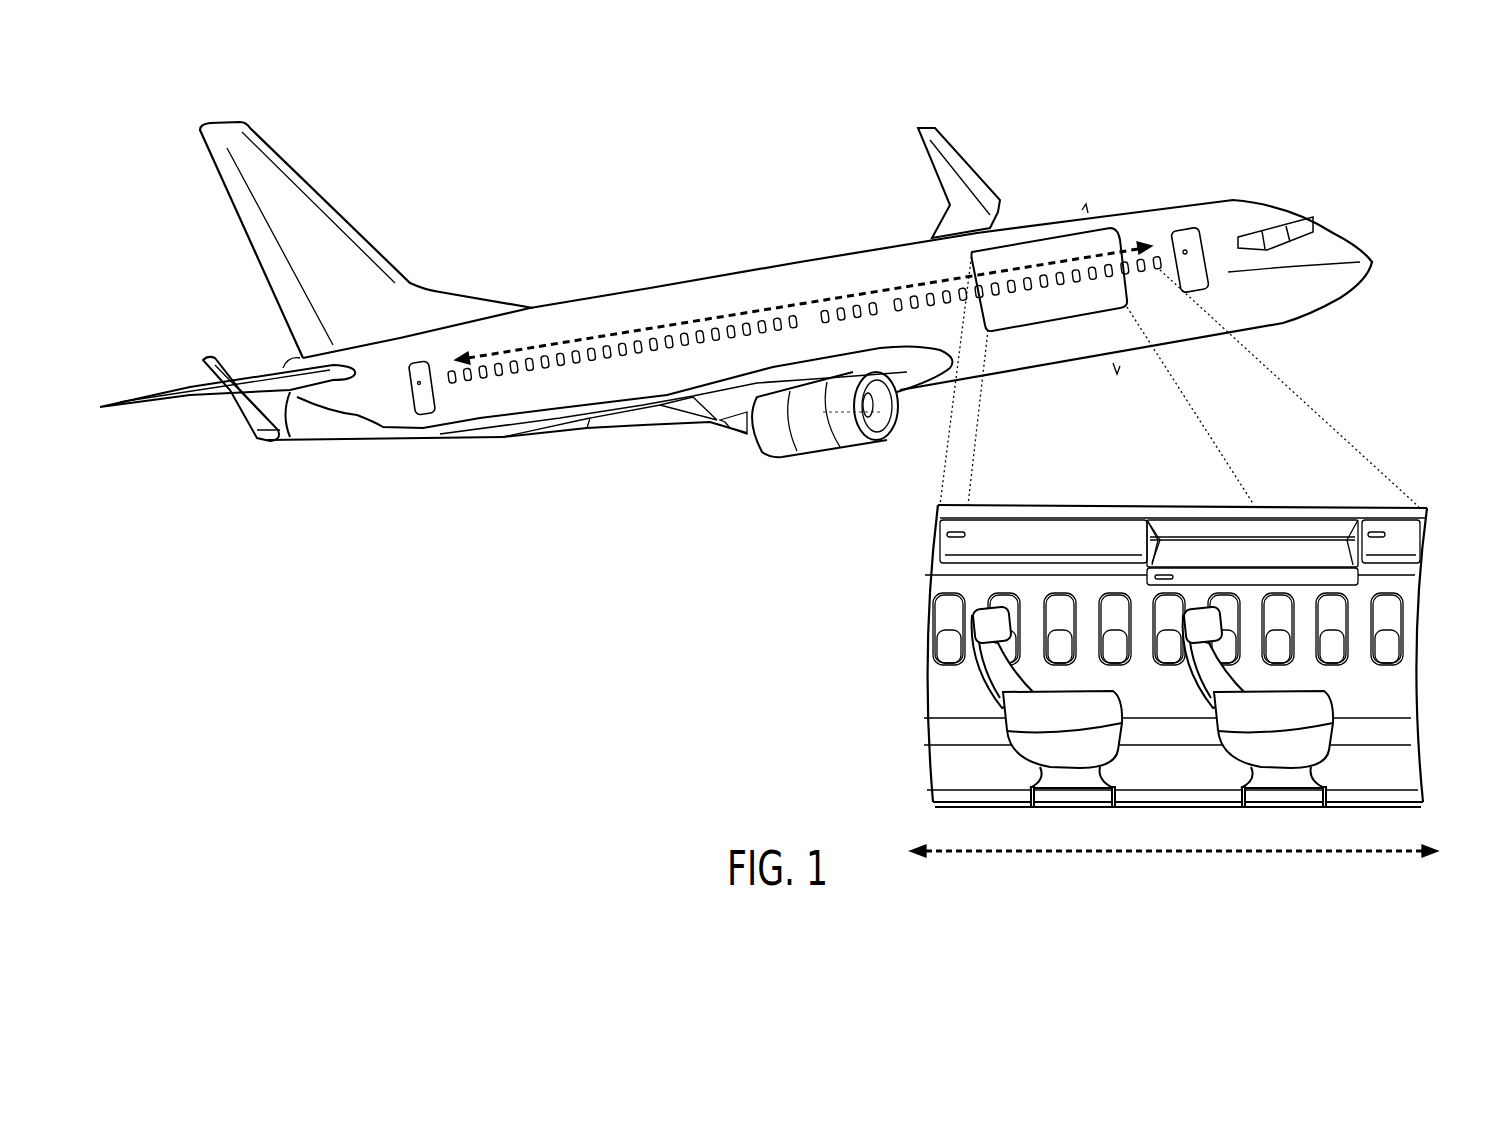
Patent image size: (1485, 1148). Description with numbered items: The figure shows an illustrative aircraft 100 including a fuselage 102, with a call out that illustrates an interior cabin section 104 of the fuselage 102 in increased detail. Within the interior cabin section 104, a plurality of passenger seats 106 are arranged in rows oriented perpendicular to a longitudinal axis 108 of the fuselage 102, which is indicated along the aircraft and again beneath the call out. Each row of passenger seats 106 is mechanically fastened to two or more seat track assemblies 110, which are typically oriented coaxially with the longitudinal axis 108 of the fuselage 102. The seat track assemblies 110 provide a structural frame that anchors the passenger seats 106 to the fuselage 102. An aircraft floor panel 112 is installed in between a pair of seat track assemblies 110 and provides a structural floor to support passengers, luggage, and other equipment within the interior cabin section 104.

The aircraft 100 is at (1292, 323).
The fuselage 102 is at (697, 297).
The interior cabin section 104 is at (1045, 250).
The passenger seats 106 is at (1343, 700).
The longitudinal axis 108 is at (752, 308).
The seat track assemblies 110 is at (1398, 800).
The aircraft floor panel 112 is at (1380, 795).